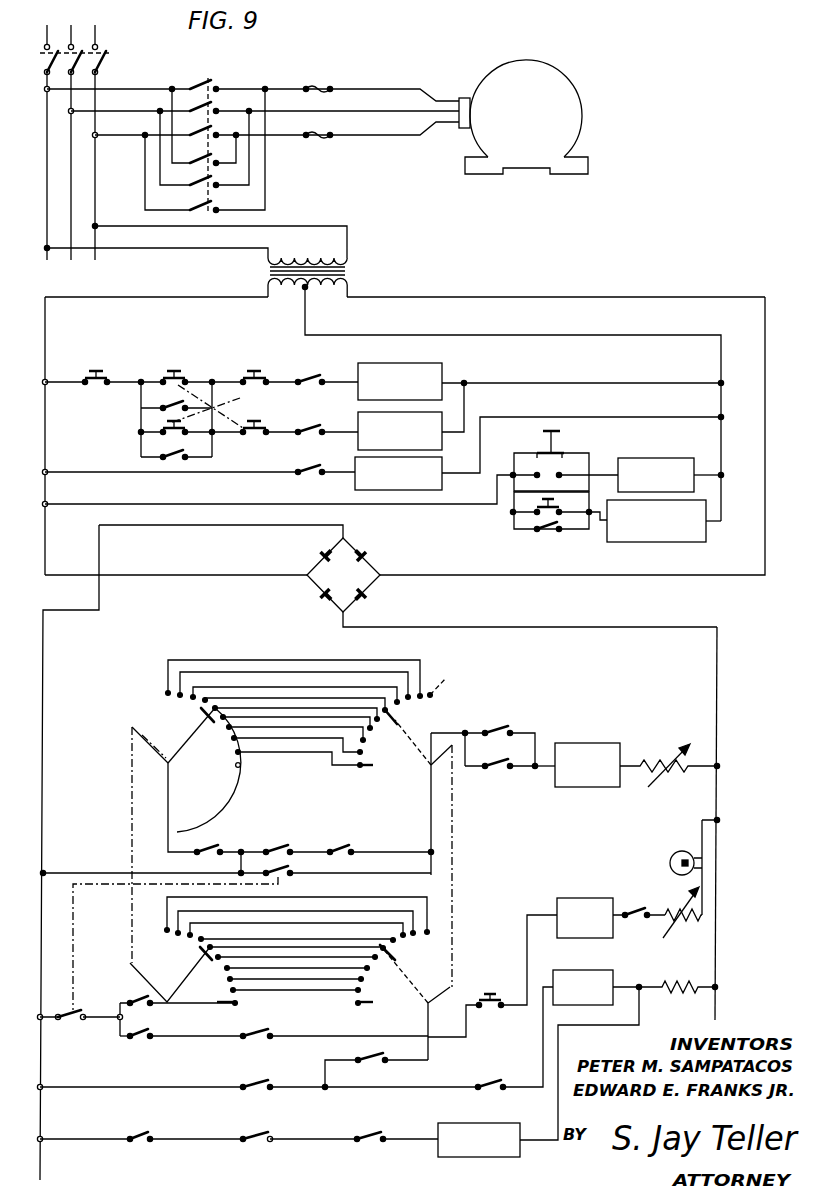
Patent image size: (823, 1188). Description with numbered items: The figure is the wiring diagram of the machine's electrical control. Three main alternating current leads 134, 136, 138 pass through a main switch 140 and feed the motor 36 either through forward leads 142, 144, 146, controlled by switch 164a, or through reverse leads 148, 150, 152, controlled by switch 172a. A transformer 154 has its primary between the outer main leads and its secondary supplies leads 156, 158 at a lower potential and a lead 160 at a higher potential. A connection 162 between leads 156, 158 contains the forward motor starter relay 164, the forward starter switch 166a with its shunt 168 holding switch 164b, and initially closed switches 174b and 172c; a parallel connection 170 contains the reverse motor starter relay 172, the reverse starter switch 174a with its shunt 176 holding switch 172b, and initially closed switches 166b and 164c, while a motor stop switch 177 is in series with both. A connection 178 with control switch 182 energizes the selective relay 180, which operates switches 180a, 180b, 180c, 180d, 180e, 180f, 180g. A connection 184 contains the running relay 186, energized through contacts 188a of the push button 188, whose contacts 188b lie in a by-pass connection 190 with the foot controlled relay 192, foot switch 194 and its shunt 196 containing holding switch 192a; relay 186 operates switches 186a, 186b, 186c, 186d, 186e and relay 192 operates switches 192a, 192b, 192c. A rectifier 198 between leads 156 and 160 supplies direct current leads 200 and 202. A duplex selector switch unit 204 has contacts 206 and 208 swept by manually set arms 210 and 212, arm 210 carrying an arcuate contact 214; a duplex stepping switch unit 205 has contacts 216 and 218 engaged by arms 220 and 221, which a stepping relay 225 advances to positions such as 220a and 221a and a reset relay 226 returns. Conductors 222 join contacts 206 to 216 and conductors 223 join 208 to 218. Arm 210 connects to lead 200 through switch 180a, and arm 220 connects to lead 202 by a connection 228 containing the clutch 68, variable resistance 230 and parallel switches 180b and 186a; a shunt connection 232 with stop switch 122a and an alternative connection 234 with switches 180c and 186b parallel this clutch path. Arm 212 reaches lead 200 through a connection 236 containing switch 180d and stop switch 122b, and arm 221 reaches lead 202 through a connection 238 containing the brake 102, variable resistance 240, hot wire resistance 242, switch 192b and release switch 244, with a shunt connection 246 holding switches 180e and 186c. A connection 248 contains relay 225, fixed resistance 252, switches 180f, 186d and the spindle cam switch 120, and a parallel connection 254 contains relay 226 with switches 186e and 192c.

The motor 36 is at (570, 95).
The main alternating current lead 134 is at (50, 133).
The main alternating current lead 136 is at (72, 168).
The main alternating current lead 138 is at (95, 197).
The main switch 140 is at (104, 61).
The forward lead 142 is at (184, 79).
The forward lead 144 is at (182, 110).
The forward lead 146 is at (182, 134).
The reverse lead 148 is at (182, 162).
The reverse lead 150 is at (182, 185).
The reverse lead 152 is at (182, 209).
The transformer 154 is at (352, 268).
The lead 156 is at (45, 333).
The lead 158 is at (720, 372).
The lead 160 is at (765, 417).
The connection 162 is at (224, 380).
The forward motor starter relay 164 is at (442, 371).
The switch 164a is at (203, 76).
The switch 164b is at (166, 422).
The switch 164c is at (304, 431).
The forward starter switch 166a is at (197, 359).
The switch 166b is at (267, 437).
The shunt 168 is at (160, 408).
The connection 170 is at (246, 388).
The reverse motor starter relay 172 is at (442, 417).
The switch 172a is at (210, 146).
The switch 172b is at (173, 456).
The switch 172c is at (313, 367).
The reverse starter switch 174a is at (192, 427).
The switch 174b is at (267, 388).
The shunt 176 is at (150, 457).
The motor stop switch 177 is at (105, 378).
The connection 178 is at (213, 474).
The selective relay 180 is at (478, 447).
The switch 180a is at (203, 847).
The switch 180b is at (500, 726).
The switch 180c is at (287, 847).
The switch 180d is at (137, 997).
The switch 180e is at (145, 1033).
The switch 180f is at (140, 1128).
The switch 180g is at (359, 1064).
The control switch 182 is at (297, 478).
The connection 184 is at (219, 503).
The running relay 186 is at (702, 446).
The switch 186a is at (498, 768).
The switch 186b is at (348, 845).
The switch 186c is at (253, 1022).
The switch 186d is at (258, 1137).
The switch 186e is at (263, 1082).
The push button 188 is at (554, 432).
The contacts 188a is at (534, 477).
The contacts 188b is at (536, 452).
The by-pass connection 190 is at (590, 463).
The foot controlled relay 192 is at (707, 501).
The switch 192a is at (543, 531).
The switch 192b is at (626, 912).
The switch 192c is at (491, 1084).
The foot controlled switch 194 is at (543, 507).
The shunt 196 is at (523, 530).
The rectifier 198 is at (368, 560).
The lead 200 is at (46, 655).
The lead 202 is at (720, 723).
The duplex selector switch unit 204 is at (162, 717).
The duplex stepping switch unit 205 is at (444, 692).
The contacts 206 is at (230, 753).
The contacts 208 is at (217, 981).
The pivoted arm 210 is at (193, 738).
The pivoted arm 212 is at (190, 969).
The arcuate contact 214 is at (235, 791).
The contacts 216 is at (372, 768).
The contacts 218 is at (375, 995).
The arm 220 is at (396, 767).
The position 220a is at (450, 697).
The arm 221 is at (383, 1007).
The position 221a is at (398, 983).
The conductors 222 is at (263, 673).
The conductors 223 is at (363, 912).
The stepping relay 225 is at (538, 1113).
The reset relay 226 is at (182, 880).
The connection 228 is at (548, 768).
The variable resistance 230 is at (670, 755).
The shunt connection 232 is at (358, 875).
The alternative connection 234 is at (426, 855).
The connection 236 is at (100, 1005).
The connection 238 is at (527, 935).
The variable resistance 240 is at (681, 911).
The hot wire resistance 242 is at (687, 855).
The release switch 244 is at (483, 996).
The shunt connection 246 is at (166, 1043).
The connection 248 is at (180, 1137).
The fixed resistance 252 is at (665, 975).
The connection 254 is at (374, 1075).
The clutch 68 is at (600, 743).
The brake 102 is at (585, 889).
The spindle cam operated switch 120 is at (370, 1128).
The stop switch contacts 122a is at (287, 880).
The stop switch contacts 122b is at (73, 1018).